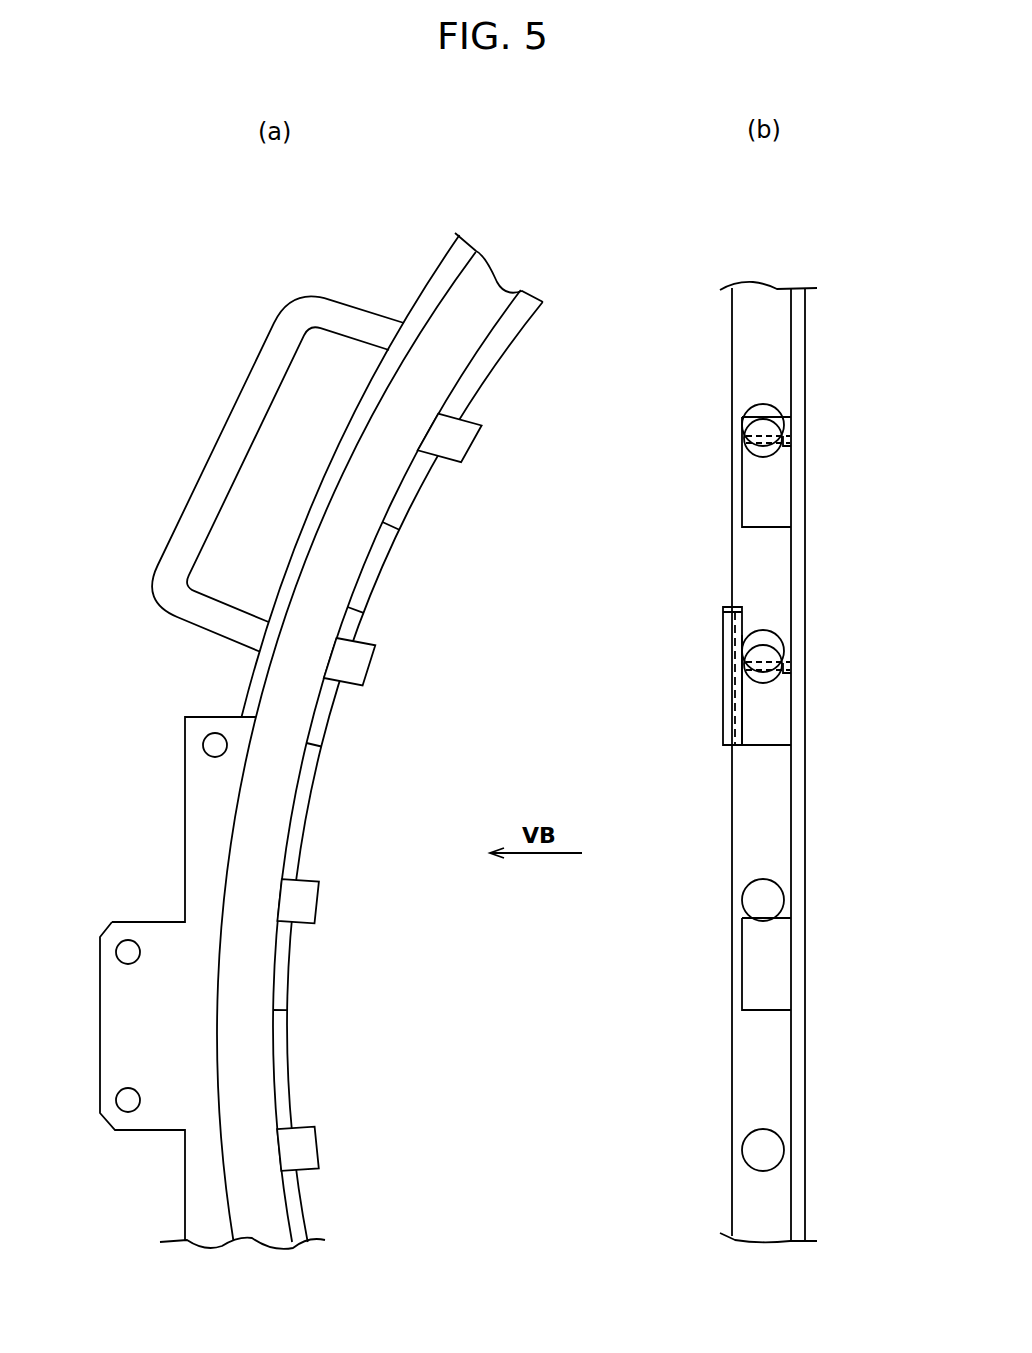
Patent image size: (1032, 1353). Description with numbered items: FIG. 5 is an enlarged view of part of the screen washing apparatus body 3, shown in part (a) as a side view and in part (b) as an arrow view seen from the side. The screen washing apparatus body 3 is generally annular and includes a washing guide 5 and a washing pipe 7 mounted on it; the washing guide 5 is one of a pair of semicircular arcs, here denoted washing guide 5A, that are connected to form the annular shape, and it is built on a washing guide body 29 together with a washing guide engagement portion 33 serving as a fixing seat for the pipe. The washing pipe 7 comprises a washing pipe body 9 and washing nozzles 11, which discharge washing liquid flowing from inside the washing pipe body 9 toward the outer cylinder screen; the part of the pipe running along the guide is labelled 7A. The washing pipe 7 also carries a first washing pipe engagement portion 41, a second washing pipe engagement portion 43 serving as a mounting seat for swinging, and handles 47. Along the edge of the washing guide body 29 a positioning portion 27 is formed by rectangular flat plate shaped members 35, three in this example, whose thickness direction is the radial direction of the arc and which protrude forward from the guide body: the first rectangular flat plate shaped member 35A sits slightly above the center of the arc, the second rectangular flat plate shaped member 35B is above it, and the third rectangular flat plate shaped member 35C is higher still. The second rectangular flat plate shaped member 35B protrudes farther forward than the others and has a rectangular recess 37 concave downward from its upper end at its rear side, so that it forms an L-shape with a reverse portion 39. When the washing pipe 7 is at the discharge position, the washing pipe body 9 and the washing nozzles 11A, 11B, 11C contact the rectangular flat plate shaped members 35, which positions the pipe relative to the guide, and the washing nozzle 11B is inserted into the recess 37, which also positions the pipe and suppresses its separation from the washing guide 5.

The screen washing apparatus body 3 is at (441, 262).
The washing guide 5 is at (563, 735).
The washing guide 5A is at (511, 735).
The washing pipe 7 is at (509, 765).
The inner flange portion 7A is at (470, 341).
The washing pipe body 9 is at (492, 290).
The washing nozzles 11 is at (596, 787).
The washing nozzle 11A is at (319, 901).
The washing nozzle 11B is at (374, 658).
The washing nozzle 11C is at (480, 434).
The positioning portion 27 is at (352, 709).
The washing guide body 29 is at (251, 683).
The washing guide engagement portion 33 is at (185, 763).
The rectangular flat plate shaped member 35 is at (594, 713).
The first rectangular flat plate shaped member 35A is at (286, 970).
The second rectangular flat plate shaped member 35B is at (322, 732).
The third rectangular flat plate shaped member 35C is at (405, 492).
The recess 37 is at (790, 660).
The reverse portion 39 is at (722, 632).
The first washing pipe engagement portion 41 is at (182, 819).
The second washing pipe engagement portion 43 is at (100, 997).
The handles 47 is at (227, 424).